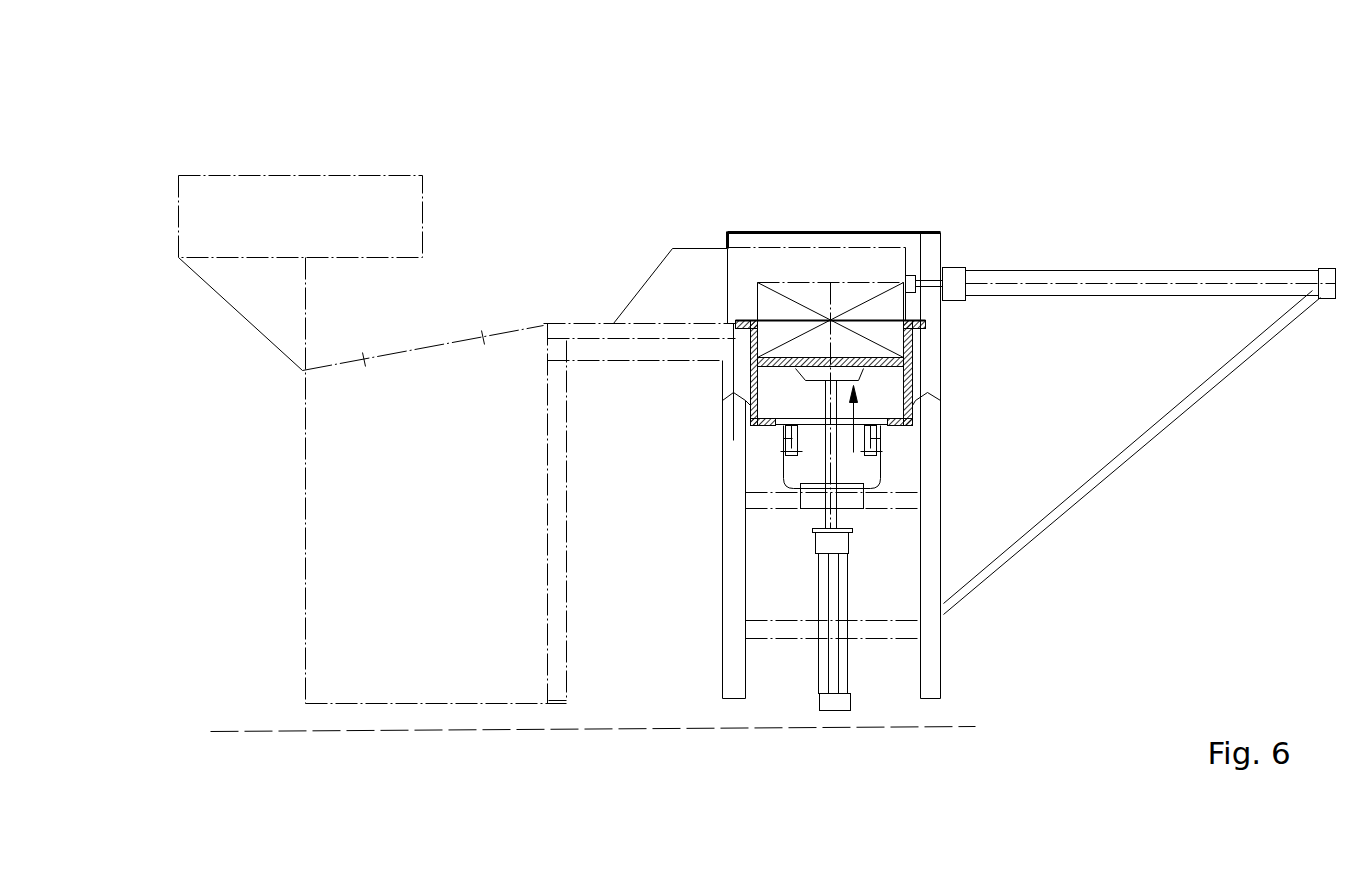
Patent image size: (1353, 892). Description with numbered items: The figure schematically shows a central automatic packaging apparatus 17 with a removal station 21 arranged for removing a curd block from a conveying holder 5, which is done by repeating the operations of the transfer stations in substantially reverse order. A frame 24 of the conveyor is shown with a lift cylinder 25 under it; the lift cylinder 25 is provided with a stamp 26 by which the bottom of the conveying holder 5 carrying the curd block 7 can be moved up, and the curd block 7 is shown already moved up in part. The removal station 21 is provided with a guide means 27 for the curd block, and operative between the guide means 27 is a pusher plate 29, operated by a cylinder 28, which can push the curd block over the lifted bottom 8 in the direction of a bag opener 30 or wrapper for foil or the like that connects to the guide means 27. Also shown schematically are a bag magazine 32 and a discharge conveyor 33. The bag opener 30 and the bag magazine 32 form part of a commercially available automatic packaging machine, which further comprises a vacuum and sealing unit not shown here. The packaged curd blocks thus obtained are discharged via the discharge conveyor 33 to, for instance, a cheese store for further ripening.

The conveying holder 5 is at (913, 377).
The curd block 7 is at (894, 317).
The lifted bottom 8 is at (772, 366).
The central automatic packaging apparatus 17 is at (707, 150).
The removal station 21 is at (947, 195).
The frame 24 is at (930, 503).
The lift cylinder 25 is at (838, 573).
The stamp 26 is at (802, 373).
The guide means 27 is at (817, 262).
The cylinder 28 is at (1062, 270).
The pusher plate 29 is at (907, 262).
The bag opener 30 is at (690, 282).
The bag magazine 32 is at (390, 204).
The discharge conveyor 33 is at (342, 365).